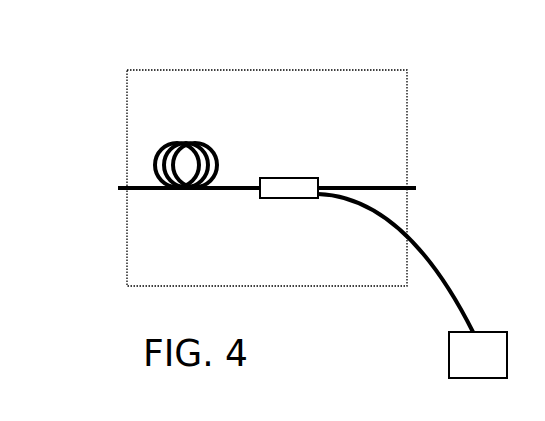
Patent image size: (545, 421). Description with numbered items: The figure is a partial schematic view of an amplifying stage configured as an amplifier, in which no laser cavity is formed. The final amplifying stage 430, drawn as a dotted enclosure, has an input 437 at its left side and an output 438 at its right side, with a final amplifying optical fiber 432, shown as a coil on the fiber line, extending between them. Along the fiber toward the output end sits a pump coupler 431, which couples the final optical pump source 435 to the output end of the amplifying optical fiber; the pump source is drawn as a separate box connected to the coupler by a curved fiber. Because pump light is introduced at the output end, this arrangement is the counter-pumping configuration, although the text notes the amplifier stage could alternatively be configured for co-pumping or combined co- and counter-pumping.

The final amplifying stage 430 is at (317, 70).
The pump coupler 431 is at (286, 192).
The final amplifying optical fiber 432 is at (222, 128).
The final optical pump source 435 is at (498, 370).
The input 437 is at (121, 180).
The output 438 is at (416, 167).